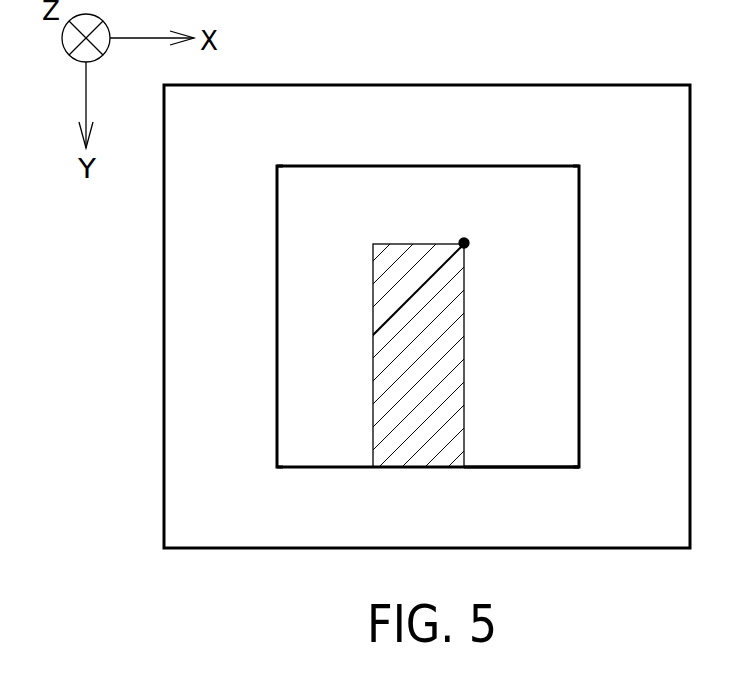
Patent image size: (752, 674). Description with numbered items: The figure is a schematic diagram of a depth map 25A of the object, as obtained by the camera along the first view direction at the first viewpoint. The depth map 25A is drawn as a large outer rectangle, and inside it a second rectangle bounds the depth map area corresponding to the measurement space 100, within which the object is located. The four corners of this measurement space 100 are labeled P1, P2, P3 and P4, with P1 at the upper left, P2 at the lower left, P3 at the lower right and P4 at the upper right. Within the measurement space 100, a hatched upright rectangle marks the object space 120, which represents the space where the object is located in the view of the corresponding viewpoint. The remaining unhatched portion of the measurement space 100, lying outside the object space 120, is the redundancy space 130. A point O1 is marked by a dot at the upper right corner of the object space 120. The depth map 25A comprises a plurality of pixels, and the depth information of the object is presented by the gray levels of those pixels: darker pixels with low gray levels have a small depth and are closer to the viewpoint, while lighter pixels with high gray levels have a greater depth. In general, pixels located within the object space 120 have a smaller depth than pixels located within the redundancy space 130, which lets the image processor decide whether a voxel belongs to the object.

The depth map 25A is at (612, 85).
The measurement space 100 is at (503, 165).
The object space 120 is at (413, 410).
The redundancy space 130 is at (528, 433).
The reference point O1 is at (469, 241).
The corner point P1 is at (263, 152).
The corner point P2 is at (263, 481).
The corner point P3 is at (592, 481).
The corner point P4 is at (592, 152).